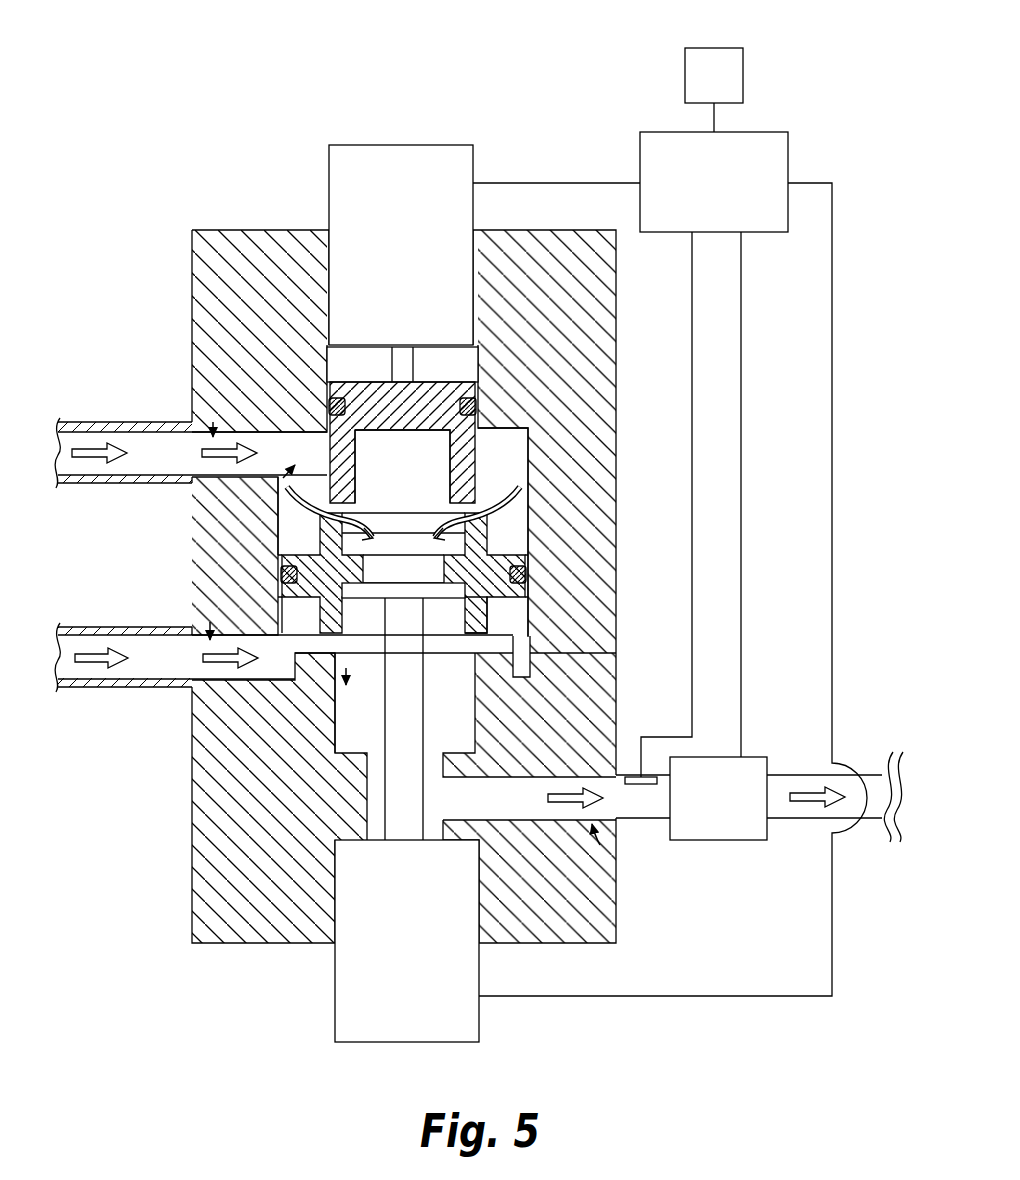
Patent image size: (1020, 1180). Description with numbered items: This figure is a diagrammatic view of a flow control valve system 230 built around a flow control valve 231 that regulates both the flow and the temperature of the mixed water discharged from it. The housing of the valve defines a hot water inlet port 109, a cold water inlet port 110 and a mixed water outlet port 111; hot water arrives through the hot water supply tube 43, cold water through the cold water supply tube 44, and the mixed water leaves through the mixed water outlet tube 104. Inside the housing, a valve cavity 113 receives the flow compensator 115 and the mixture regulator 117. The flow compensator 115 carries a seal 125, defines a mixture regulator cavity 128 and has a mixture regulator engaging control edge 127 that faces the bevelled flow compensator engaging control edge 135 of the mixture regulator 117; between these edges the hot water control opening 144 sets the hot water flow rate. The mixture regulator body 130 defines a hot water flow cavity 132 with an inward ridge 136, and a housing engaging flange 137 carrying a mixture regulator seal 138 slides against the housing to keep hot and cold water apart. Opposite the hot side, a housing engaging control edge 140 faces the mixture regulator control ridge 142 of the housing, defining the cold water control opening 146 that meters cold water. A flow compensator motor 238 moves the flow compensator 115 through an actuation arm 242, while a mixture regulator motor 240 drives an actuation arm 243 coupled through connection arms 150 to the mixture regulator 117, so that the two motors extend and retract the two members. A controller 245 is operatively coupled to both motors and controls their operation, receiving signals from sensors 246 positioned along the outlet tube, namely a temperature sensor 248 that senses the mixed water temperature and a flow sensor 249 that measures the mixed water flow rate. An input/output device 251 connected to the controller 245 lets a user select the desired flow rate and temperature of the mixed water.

The flow control valve system 230 is at (228, 98).
The flow control valve 231 is at (283, 230).
The flow compensator motor 238 is at (400, 145).
The mixture regulator motor 240 is at (335, 1005).
The actuation arm 242 is at (392, 370).
The hot water supply tube 43 is at (108, 422).
The hot water inlet port 109 is at (200, 432).
The valve cavity 113 is at (280, 475).
The ridge 136 is at (280, 572).
The hot water control opening 144 is at (318, 505).
The housing engaging flange 137 is at (282, 592).
The cold water supply tube 44 is at (100, 627).
The cold water inlet port 110 is at (200, 635).
The housing engaging control edge 140 is at (307, 665).
The mixture regulator control ridge 142 is at (330, 672).
The connection arms 150 is at (345, 655).
The actuation arm 243 is at (397, 790).
The flow compensator 115 is at (478, 392).
The seal 125 is at (475, 405).
The mixture regulator cavity 128 is at (428, 462).
The mixture regulator engaging control edge 127 is at (470, 470).
The flow compensator engaging control edge 135 is at (500, 525).
The mixture regulator 117 is at (530, 555).
The mixture regulator seal 138 is at (527, 575).
The mixture regulator body 130 is at (490, 625).
The cold water control opening 146 is at (482, 647).
The hot water flow cavity 132 is at (487, 607).
The flow sensor 249 is at (750, 757).
The temperature sensor 248 is at (645, 788).
The sensors 246 is at (728, 855).
The mixed water outlet tube 104 is at (785, 818).
The mixed water outlet port 111 is at (602, 848).
The input/output device 251 is at (685, 64).
The controller 245 is at (770, 132).